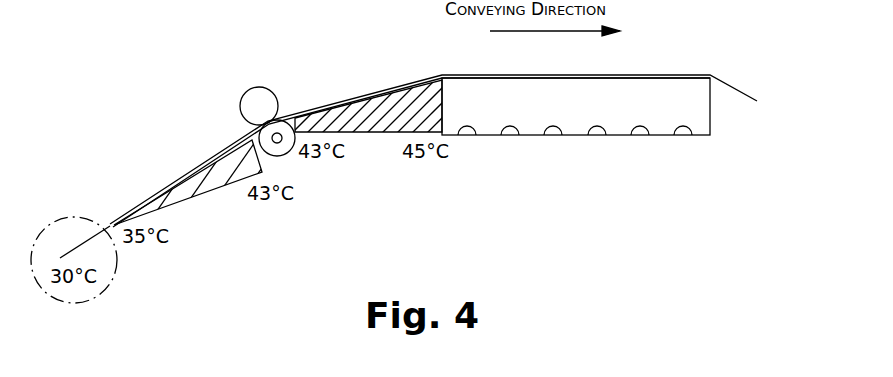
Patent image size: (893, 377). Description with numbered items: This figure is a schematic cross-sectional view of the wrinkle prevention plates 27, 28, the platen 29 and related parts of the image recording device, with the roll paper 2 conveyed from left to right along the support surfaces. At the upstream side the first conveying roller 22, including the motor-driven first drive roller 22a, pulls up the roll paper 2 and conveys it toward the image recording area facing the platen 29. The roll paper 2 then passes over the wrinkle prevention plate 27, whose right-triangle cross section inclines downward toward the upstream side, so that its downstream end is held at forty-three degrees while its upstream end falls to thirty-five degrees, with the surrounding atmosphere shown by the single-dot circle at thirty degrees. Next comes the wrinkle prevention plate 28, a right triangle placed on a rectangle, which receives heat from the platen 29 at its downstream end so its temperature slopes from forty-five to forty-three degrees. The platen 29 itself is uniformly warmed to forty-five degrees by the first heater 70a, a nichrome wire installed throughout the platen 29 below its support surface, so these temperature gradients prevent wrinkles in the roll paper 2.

The roll paper 2 is at (734, 86).
The first conveying roller 22 is at (253, 97).
The first drive roller 22a is at (283, 150).
The wrinkle prevention plate 27 is at (215, 178).
The wrinkle prevention plate 28 is at (372, 107).
The platen 29 is at (657, 95).
The first heater 70a is at (683, 137).